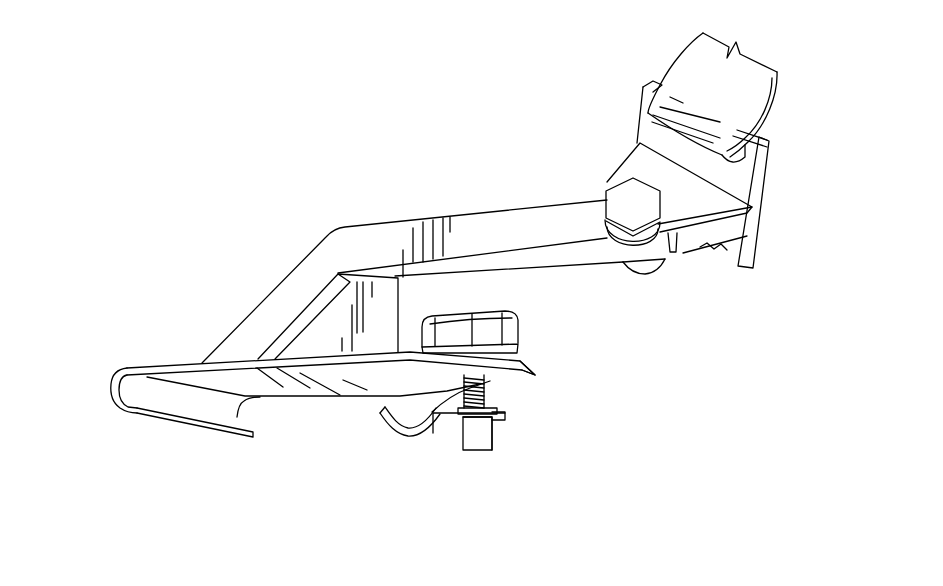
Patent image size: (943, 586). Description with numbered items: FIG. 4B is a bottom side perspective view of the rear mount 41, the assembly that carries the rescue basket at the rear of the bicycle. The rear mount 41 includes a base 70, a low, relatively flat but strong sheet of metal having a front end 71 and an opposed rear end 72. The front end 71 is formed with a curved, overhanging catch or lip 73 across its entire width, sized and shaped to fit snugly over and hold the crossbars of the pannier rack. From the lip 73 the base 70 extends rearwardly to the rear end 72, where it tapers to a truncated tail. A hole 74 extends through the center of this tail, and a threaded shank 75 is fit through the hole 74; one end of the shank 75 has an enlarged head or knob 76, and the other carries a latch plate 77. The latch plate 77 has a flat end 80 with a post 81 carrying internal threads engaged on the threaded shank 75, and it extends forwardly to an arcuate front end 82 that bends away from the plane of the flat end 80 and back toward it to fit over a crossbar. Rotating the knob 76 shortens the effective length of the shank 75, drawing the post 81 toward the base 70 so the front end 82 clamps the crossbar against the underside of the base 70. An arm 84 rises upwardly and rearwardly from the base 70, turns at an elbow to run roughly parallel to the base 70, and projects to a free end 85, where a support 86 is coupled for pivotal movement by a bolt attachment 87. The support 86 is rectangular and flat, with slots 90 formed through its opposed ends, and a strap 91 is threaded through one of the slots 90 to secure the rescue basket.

The rear mount 41 is at (452, 168).
The base 70 is at (176, 362).
The front end 71 is at (112, 397).
The rear end 72 is at (533, 375).
The lip 73 is at (177, 403).
The hole 74 is at (490, 381).
The threaded shank 75 is at (437, 427).
The knob 76 is at (513, 330).
The latch plate 77 is at (495, 442).
The flat end 80 is at (457, 423).
The post 81 is at (500, 423).
The front end 82 is at (402, 435).
The arm 84 is at (315, 266).
The free end 85 is at (656, 255).
The support 86 is at (767, 173).
The bolt attachment 87 is at (613, 209).
The slots 90 is at (770, 140).
The strap 91 is at (681, 70).